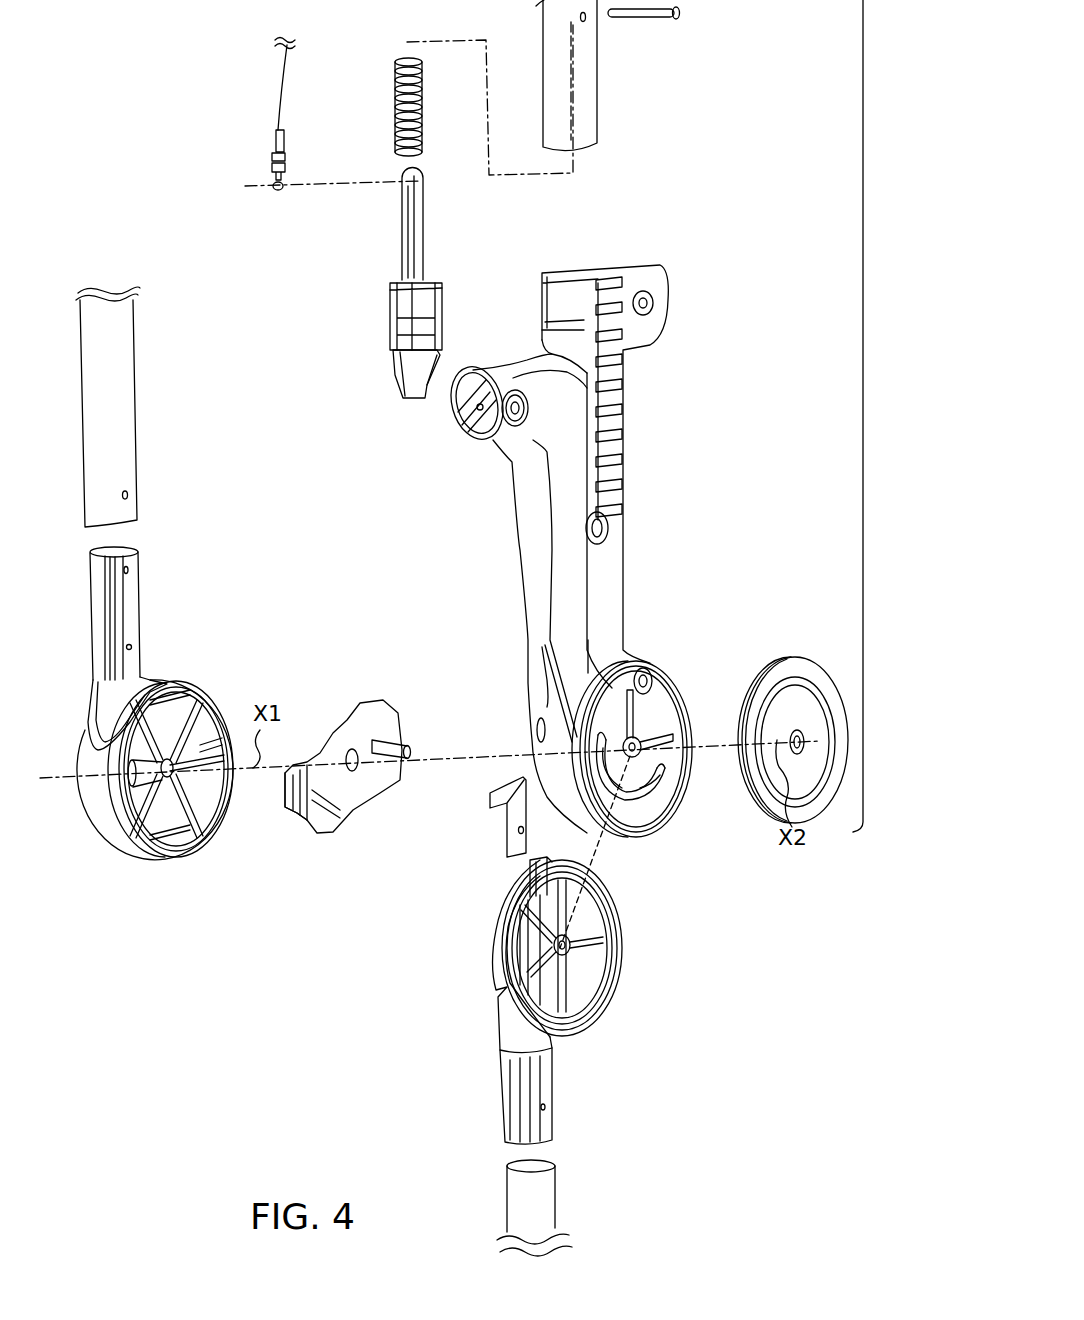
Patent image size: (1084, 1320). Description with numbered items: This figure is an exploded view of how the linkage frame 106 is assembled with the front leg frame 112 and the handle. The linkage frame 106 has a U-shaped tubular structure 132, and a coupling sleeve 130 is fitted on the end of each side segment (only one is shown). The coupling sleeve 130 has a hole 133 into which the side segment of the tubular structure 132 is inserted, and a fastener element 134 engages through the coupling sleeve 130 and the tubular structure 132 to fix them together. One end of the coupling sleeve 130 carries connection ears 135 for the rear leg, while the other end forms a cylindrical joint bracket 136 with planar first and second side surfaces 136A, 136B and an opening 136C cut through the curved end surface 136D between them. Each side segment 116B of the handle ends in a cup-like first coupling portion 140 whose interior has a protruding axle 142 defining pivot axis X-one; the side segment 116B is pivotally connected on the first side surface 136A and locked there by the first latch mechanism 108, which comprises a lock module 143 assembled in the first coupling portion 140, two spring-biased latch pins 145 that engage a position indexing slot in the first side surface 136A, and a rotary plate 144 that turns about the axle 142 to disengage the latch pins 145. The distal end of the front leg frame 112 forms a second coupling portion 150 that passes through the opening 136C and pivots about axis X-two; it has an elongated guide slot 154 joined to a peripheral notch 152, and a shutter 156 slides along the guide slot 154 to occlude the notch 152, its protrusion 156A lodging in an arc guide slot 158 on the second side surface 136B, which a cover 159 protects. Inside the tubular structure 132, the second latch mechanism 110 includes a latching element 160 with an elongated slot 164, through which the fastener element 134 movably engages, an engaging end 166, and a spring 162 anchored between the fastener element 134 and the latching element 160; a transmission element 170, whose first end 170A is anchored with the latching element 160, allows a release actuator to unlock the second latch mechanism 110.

The linkage frame 106 is at (862, 398).
The first latch mechanism 108 is at (230, 907).
The second latch mechanism 110 is at (342, 283).
The front leg frame 112 is at (552, 1200).
The side segment of the handle 116B is at (127, 335).
The coupling sleeve 130 is at (542, 572).
The tubular structure 132 is at (590, 128).
The hole 133 is at (580, 263).
The fastener element 134 is at (681, 13).
The connection ears 135 is at (503, 443).
The joint bracket 136 is at (645, 663).
The first side surface 136A is at (535, 733).
The second side surface 136B is at (707, 683).
The opening 136C is at (604, 837).
The curved end surface 136D is at (577, 860).
The first coupling portion 140 is at (167, 683).
The axle 142 is at (157, 857).
The lock module 143 is at (305, 828).
The rotary plate 144 is at (382, 702).
The latch pins 145 is at (410, 738).
The second coupling portion 150 is at (512, 967).
The notch 152 is at (508, 886).
The guide slot 154 is at (510, 939).
The shutter 156 is at (492, 792).
The protrusion 156A is at (518, 830).
The arc guide slot 158 is at (675, 754).
The cover 159 is at (800, 667).
The latching element 160 is at (390, 320).
The spring 162 is at (395, 63).
The elongated slot 164 is at (433, 232).
The engaging end 166 is at (400, 380).
The transmission element 170 is at (278, 93).
The first end of the transmission element 170A is at (271, 165).